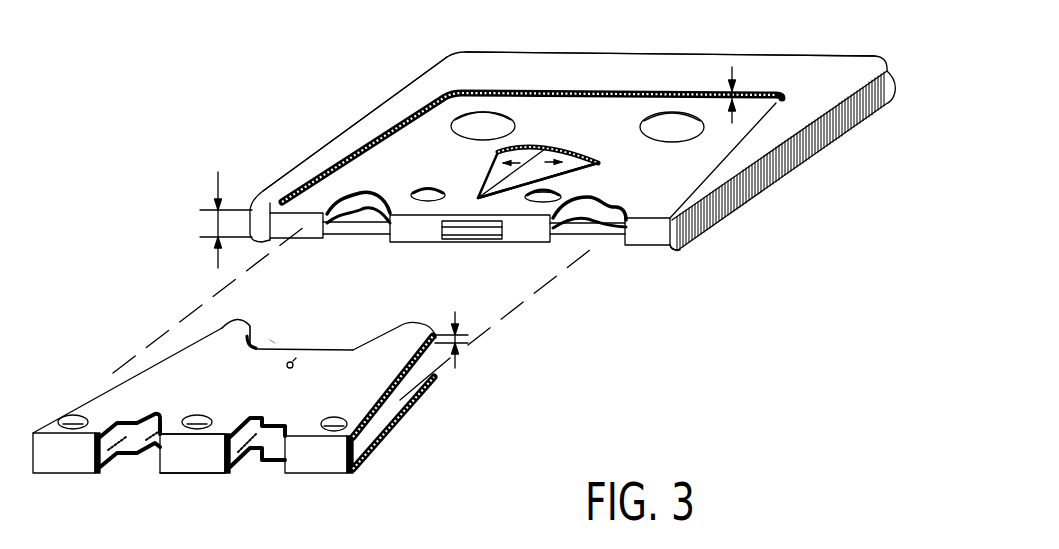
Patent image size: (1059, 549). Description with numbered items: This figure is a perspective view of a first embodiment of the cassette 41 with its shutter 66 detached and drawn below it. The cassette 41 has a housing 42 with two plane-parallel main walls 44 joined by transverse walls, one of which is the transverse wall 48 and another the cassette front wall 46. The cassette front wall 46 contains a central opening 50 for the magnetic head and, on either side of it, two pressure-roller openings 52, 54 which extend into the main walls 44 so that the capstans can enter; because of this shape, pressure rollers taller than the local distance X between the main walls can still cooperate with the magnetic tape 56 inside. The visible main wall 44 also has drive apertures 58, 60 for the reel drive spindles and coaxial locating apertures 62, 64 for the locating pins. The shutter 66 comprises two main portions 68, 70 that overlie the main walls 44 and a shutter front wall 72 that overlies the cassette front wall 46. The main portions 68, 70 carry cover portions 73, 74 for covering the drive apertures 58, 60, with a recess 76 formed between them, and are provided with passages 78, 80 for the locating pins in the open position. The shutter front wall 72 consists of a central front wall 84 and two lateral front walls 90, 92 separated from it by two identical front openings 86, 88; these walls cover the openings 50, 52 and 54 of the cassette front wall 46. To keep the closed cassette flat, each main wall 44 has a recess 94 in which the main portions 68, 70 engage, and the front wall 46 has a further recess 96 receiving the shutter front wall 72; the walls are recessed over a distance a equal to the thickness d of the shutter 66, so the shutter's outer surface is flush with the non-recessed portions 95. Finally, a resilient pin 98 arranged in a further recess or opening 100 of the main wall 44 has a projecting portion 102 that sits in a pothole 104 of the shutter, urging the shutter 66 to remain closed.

The cassette 41 is at (504, 220).
The housing 42 is at (720, 55).
The main walls 44 is at (440, 75).
The cassette front wall 46 is at (417, 233).
The transverse wall 48 is at (743, 218).
The central opening 50 is at (480, 237).
The pressure-roller opening 52 is at (350, 203).
The pressure-roller opening 54 is at (608, 217).
The magnetic tape 56 is at (597, 232).
The drive aperture 58 is at (487, 128).
The drive aperture 60 is at (673, 127).
The locating aperture 62 is at (423, 187).
The locating aperture 64 is at (558, 196).
The shutter 66 is at (261, 407).
The main portion 68 is at (358, 362).
The main portion 70 is at (413, 397).
The shutter front wall 72 is at (173, 468).
The cover portion 73 is at (243, 330).
The cover portion 74 is at (414, 327).
The recess 76 is at (305, 340).
The passage 78 is at (73, 420).
The passage 80 is at (197, 419).
The central front wall 84 is at (203, 460).
The front opening 86 is at (124, 465).
The front opening 88 is at (262, 464).
The lateral front wall 90 is at (68, 462).
The lateral front wall 92 is at (327, 463).
The recess 94 is at (578, 110).
The non-recessed portions 95 is at (858, 78).
The further recess 96 is at (655, 240).
The resilient pin 98 is at (495, 165).
The further recess or opening 100 is at (575, 162).
The projecting portion 102 is at (542, 152).
The pothole 104 is at (287, 369).
The local distance X is at (218, 223).
The recess distance a is at (741, 96).
The shutter thickness d is at (465, 335).